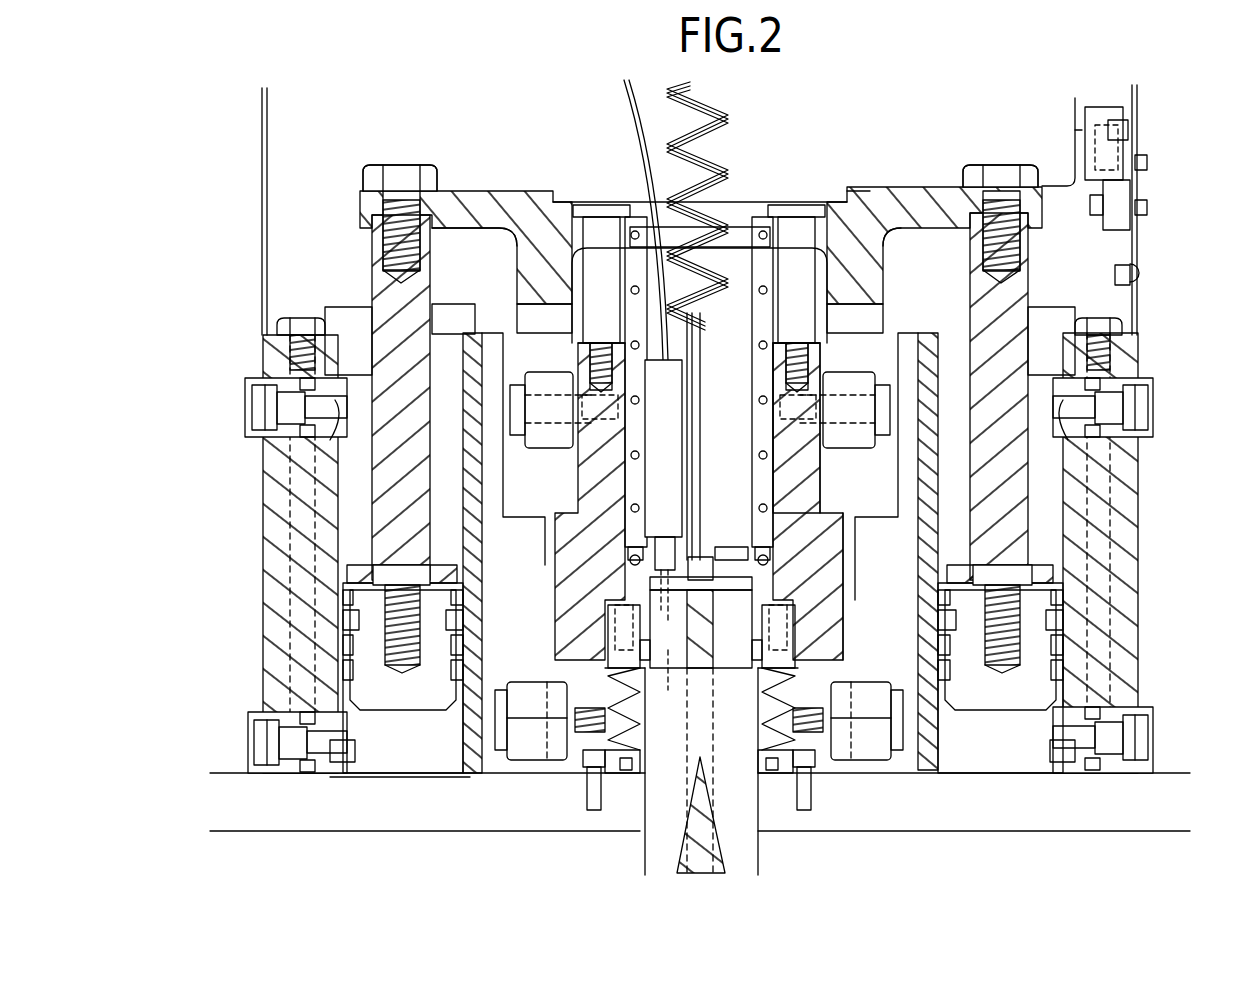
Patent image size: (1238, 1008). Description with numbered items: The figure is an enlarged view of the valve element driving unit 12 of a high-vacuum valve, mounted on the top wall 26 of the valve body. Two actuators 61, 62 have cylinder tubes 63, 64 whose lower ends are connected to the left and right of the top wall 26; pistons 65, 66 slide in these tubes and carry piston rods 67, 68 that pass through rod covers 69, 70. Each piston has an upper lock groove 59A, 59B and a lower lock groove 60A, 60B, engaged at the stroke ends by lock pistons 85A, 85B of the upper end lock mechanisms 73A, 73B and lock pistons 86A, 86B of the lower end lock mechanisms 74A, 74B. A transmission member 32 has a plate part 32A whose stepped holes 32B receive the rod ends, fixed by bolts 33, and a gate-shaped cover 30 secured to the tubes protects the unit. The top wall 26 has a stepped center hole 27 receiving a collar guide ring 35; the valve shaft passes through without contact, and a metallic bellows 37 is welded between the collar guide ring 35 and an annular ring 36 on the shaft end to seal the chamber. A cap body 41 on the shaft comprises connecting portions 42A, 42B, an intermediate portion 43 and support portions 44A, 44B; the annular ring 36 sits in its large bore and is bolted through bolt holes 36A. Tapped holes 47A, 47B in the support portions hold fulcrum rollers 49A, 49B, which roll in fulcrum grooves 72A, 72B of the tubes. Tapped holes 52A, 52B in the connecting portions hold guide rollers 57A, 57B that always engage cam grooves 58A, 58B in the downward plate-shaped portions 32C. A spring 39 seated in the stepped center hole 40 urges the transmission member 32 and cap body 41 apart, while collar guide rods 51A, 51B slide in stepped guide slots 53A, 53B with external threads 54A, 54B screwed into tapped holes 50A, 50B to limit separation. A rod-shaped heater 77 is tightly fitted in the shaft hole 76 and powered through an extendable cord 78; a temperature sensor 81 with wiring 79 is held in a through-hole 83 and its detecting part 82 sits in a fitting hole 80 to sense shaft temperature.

The valve element driving unit 12 is at (1148, 122).
The top wall (bonnet) 26 is at (1115, 812).
The stepped center hole 27 is at (758, 800).
The cover 30 is at (261, 132).
The transmission member 32 is at (893, 200).
The plate part 32A is at (497, 200).
The stepped holes 32B is at (402, 192).
The plate-shaped portions 32C is at (517, 260).
The bolts 33 is at (428, 175).
The collar guide ring 35 is at (616, 770).
The annular ring 36 is at (760, 582).
The bolt holes 36A is at (800, 625).
The metallic bellows 37 is at (640, 738).
The spring 39 is at (765, 445).
The stepped center hole 40 is at (745, 215).
The cap body 41 is at (835, 512).
The connecting portion 42A is at (575, 515).
The connecting portion 42B is at (795, 466).
The intermediate portion 43 is at (740, 548).
The support portion 44A is at (595, 778).
The support portion 44B is at (812, 778).
The tapped hole 47A is at (580, 735).
The tapped hole 47B is at (835, 735).
The fulcrum roller 49A is at (526, 688).
The fulcrum roller 49B is at (876, 690).
The tapped hole 50A is at (601, 343).
The tapped hole 50B is at (797, 343).
The collar guide rod 51A is at (610, 225).
The collar guide rod 51B is at (808, 225).
The tapped hole 52A is at (578, 380).
The tapped hole 52B is at (772, 392).
The stepped guide slot 53A is at (590, 228).
The stepped guide slot 53B is at (784, 225).
The external thread 54A is at (623, 343).
The external thread 54B is at (770, 343).
The guide roller 57A is at (546, 448).
The guide roller 57B is at (844, 440).
The cam groove 58A is at (517, 320).
The cam groove 58B is at (878, 326).
The upper lock groove 59A is at (345, 598).
The upper lock groove 59B is at (1062, 592).
The lower lock groove 60A is at (345, 680).
The lower lock groove 60B is at (1058, 675).
The actuator 61 is at (352, 500).
The actuator 62 is at (1048, 505).
The cylinder tube 63 is at (458, 571).
The cylinder tube 64 is at (925, 531).
The piston 65 is at (438, 712).
The piston 66 is at (969, 700).
The piston rod 67 is at (378, 305).
The piston rod 68 is at (1018, 285).
The rod cover 69 is at (335, 318).
The rod cover 70 is at (1061, 318).
The fulcrum groove 72A is at (494, 618).
The fulcrum groove 72B is at (865, 600).
The upper end lock mechanism 73A is at (248, 385).
The upper end lock mechanism 73B is at (1143, 382).
The lower end lock mechanism 74A is at (250, 720).
The lower end lock mechanism 74B is at (1158, 735).
The shaft hole 76 is at (715, 705).
The rod-shaped heater 77 is at (700, 832).
The extendable cord 78 is at (715, 152).
The wiring 79 is at (636, 108).
The fitting hole 80 is at (690, 678).
The temperature sensor 81 is at (660, 449).
The detecting part 82 is at (665, 565).
The through-hole 83 is at (700, 555).
The lock piston 85A is at (335, 420).
The lock piston 85B is at (1063, 420).
The lock piston 86A is at (355, 748).
The lock piston 86B is at (1062, 768).